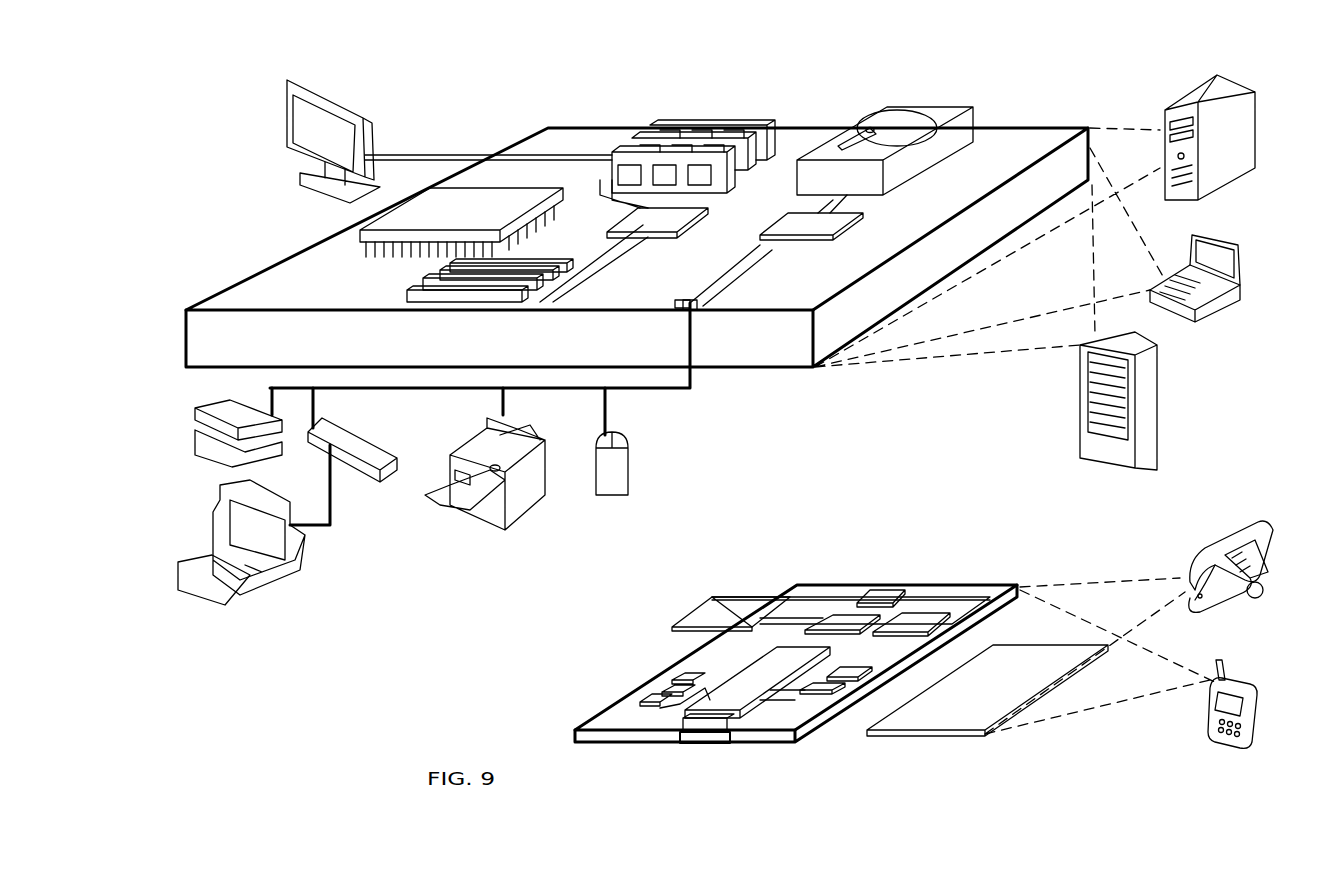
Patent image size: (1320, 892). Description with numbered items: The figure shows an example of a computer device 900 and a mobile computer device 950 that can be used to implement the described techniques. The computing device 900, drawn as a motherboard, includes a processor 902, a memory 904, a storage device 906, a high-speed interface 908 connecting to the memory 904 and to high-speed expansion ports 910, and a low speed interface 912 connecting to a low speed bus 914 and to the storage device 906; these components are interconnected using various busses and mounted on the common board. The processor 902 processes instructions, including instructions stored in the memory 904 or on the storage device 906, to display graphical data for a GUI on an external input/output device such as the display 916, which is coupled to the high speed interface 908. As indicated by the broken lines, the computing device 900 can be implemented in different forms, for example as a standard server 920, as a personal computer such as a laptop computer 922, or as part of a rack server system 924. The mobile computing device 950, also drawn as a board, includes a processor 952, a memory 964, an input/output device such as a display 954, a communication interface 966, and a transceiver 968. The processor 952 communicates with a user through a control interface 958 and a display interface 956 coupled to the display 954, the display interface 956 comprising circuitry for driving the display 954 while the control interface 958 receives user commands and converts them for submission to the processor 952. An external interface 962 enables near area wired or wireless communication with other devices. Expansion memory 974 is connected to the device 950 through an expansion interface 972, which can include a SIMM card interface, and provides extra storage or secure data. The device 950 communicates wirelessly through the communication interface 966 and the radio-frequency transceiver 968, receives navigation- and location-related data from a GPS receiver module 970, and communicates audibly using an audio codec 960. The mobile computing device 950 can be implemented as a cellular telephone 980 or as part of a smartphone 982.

The computing device 900 is at (476, 102).
The processor 902 is at (360, 240).
The memory 904 is at (670, 122).
The storage device 906 is at (876, 108).
The high-speed interface 908 is at (632, 225).
The high-speed expansion ports 910 is at (423, 280).
The low speed interface 912 is at (811, 223).
The low speed bus 914 is at (700, 312).
The display 916 is at (290, 86).
The standard server 920 is at (1163, 110).
The laptop computer 922 is at (1188, 242).
The rack server system 924 is at (1080, 422).
The mobile computer device 950 is at (778, 564).
The processor 952 is at (737, 718).
The display 954 is at (988, 736).
The display interface 956 is at (735, 712).
The control interface 958 is at (818, 692).
The audio codec 960 is at (850, 680).
The external interface 962 is at (703, 735).
The memory 964 is at (653, 700).
The communication interface 966 is at (838, 617).
The transceiver 968 is at (920, 617).
The GPS receiver module 970 is at (878, 600).
The expansion interface 972 is at (773, 597).
The expansion memory 974 is at (709, 598).
The cellular telephone 980 is at (1233, 530).
The smartphone 982 is at (1216, 660).